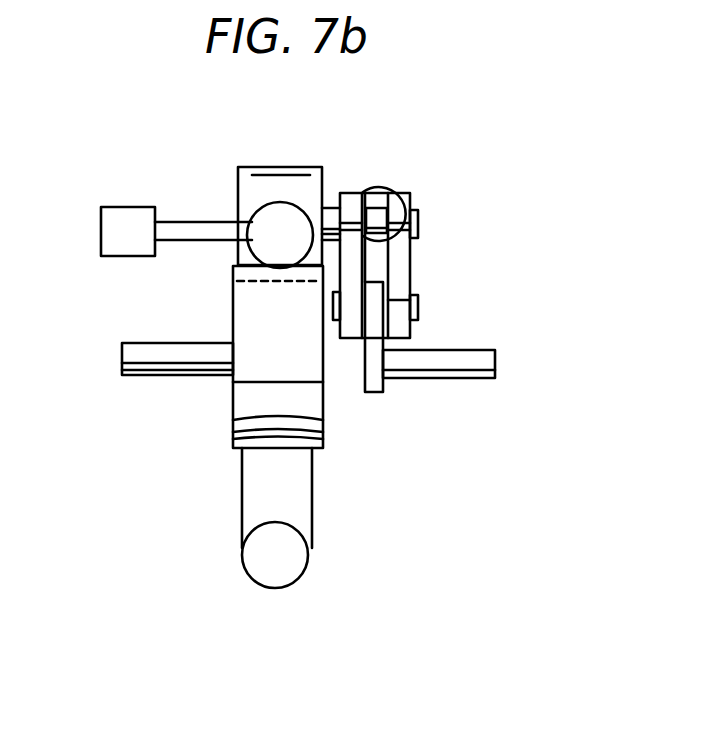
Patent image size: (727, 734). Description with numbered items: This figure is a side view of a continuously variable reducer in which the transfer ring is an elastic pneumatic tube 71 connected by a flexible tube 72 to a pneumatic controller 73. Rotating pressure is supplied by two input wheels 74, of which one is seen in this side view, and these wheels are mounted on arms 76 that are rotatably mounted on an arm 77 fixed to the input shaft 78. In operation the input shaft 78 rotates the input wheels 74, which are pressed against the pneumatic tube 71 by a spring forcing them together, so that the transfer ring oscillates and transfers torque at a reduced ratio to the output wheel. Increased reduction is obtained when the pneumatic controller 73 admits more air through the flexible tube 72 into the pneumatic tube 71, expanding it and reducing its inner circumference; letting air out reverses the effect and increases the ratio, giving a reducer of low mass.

The elastic pneumatic tube 71 is at (298, 210).
The flexible tube 72 is at (190, 230).
The pneumatic controller 73 is at (122, 218).
The input wheels 74 is at (282, 178).
The arms 76 is at (348, 248).
The arm 77 is at (375, 385).
The input shaft 78 is at (463, 372).